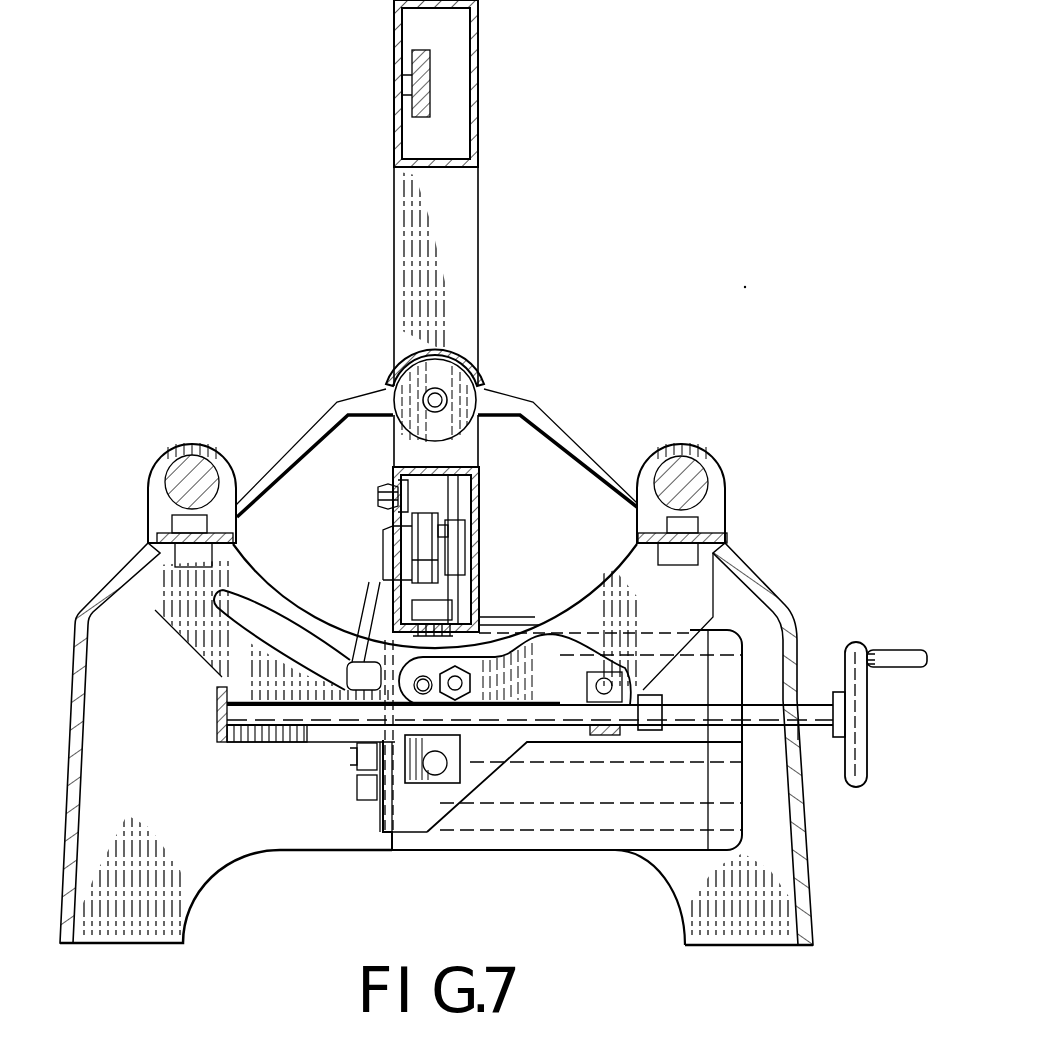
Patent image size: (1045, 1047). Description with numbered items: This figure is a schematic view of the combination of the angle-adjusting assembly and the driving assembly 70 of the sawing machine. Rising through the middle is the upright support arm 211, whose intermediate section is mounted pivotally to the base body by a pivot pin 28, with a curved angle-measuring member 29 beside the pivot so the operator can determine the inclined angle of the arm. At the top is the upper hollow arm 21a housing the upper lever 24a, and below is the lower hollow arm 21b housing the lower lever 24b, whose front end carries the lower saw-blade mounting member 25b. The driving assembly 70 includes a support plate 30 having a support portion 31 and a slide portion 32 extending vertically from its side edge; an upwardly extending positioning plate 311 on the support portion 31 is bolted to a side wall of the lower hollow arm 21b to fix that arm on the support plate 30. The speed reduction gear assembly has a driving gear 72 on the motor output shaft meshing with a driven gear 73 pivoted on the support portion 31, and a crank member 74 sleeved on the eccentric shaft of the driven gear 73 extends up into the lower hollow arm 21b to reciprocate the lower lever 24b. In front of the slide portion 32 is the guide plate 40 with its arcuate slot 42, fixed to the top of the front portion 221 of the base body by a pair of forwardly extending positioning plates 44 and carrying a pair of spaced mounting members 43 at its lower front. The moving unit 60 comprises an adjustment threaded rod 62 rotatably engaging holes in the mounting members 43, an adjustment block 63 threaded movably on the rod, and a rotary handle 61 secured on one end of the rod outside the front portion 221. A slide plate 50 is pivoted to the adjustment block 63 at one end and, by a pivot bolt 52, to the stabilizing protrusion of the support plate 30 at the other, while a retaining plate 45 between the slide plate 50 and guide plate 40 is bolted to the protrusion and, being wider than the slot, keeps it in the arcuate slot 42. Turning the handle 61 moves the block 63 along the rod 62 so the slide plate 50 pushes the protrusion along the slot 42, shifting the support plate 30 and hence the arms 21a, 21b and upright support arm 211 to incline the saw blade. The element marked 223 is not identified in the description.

The upper hollow arm 21a is at (478, 83).
The upper lever 24a is at (420, 62).
The upright support arm 211 is at (478, 227).
The curved angle-measuring member 29 is at (463, 357).
The pivot pin 28 is at (448, 394).
The lower hollow arm 21b is at (470, 535).
The lower saw-blade mounting member 25b is at (440, 523).
The lower lever 24b is at (412, 522).
The positioning plate 311 is at (392, 492).
The support portion 31 is at (384, 553).
The support plate 30 is at (500, 613).
The slide portion 32 is at (517, 625).
The positioning plates 44 is at (178, 528).
The guide plate 40 is at (184, 634).
The arcuate slot 42 is at (300, 650).
The mounting members 43 is at (217, 732).
The retaining plate 45 is at (550, 662).
The pivot bolt 52 is at (462, 693).
The adjustment threaded rod 62 is at (690, 716).
The adjustment block 63 is at (606, 736).
The moving unit 60 is at (815, 700).
The rotary handle 61 is at (856, 788).
The slide plate 50 is at (559, 700).
The crank member 74 is at (350, 775).
The driving gear 72 is at (357, 786).
The driven gear 73 is at (368, 795).
The driving assembly 70 is at (668, 860).
The front portion 221 is at (728, 575).
The frame lower wall 223 is at (778, 858).